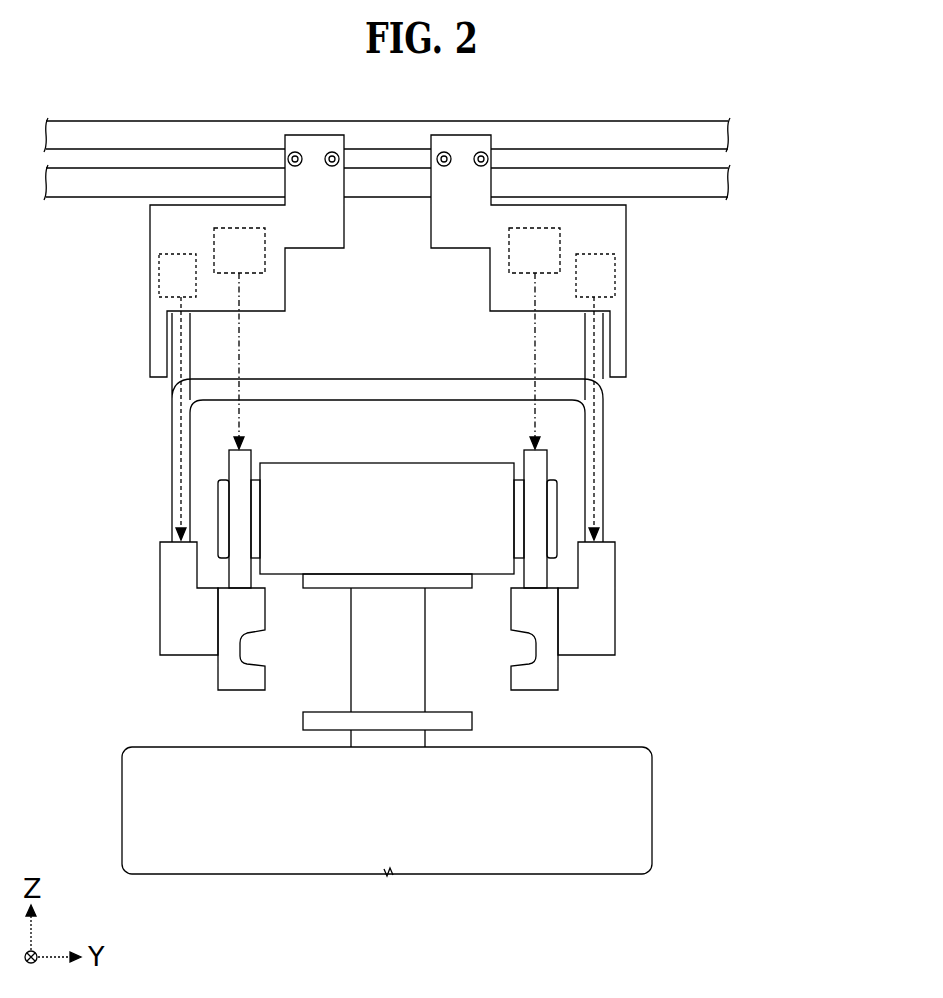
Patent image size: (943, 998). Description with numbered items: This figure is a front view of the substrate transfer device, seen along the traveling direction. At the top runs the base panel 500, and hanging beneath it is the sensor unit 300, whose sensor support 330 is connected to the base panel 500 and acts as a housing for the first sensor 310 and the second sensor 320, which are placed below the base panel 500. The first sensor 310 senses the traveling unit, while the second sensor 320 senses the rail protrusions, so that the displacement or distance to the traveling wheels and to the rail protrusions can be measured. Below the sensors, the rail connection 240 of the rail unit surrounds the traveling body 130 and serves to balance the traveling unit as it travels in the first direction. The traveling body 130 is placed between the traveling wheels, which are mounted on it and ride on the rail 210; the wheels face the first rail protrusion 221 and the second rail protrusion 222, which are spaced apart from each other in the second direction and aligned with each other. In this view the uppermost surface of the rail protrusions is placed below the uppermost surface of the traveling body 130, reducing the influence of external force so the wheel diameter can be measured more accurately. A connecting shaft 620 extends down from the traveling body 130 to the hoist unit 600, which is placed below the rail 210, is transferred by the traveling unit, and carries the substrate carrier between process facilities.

The base panel 500 is at (710, 131).
The sensor unit 300 is at (455, 489).
The sensor support 330 is at (602, 218).
The first sensor 310 is at (214, 236).
The second sensor 320 is at (159, 281).
The rail connection 240 is at (170, 420).
The traveling body 130 is at (285, 477).
The second rail protrusion 222 is at (168, 610).
The first rail protrusion 221 is at (605, 612).
The rail 210 is at (548, 673).
The connecting shaft 620 is at (415, 702).
The hoist unit 600 is at (138, 826).